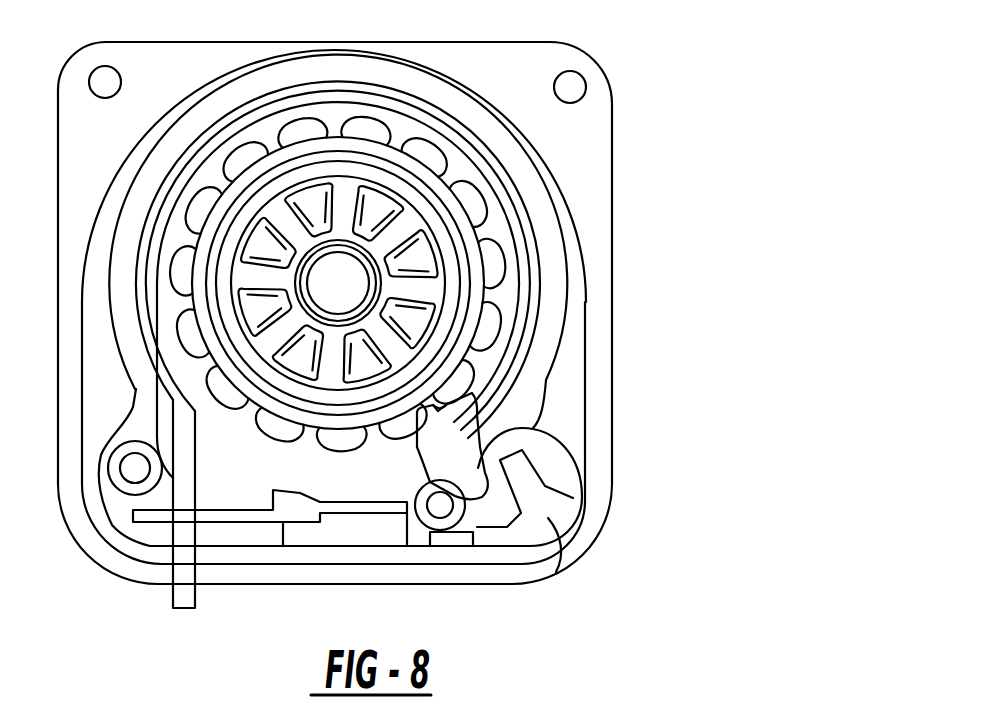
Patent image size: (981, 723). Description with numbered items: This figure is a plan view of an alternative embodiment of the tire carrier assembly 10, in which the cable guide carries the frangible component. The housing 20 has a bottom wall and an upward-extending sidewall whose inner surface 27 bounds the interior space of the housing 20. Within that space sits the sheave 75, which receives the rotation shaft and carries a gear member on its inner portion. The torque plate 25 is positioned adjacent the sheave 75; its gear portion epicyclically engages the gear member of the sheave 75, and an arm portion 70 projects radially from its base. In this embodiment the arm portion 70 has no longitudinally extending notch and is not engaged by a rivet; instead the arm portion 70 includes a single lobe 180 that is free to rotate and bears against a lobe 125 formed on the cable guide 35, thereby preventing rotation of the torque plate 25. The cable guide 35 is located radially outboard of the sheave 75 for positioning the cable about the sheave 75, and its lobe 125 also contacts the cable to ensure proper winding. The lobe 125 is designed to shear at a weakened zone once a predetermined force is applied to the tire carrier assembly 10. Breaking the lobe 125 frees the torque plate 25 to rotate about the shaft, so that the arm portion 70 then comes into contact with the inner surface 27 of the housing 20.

The tire carrier assembly 10 is at (680, 258).
The housing 20 is at (605, 160).
The inner surface 27 is at (528, 162).
The sheave 75 is at (470, 148).
The torque plate 25 is at (443, 443).
The arm portion 70 is at (477, 473).
The single lobe 180 is at (545, 430).
The lobe 125 is at (523, 478).
The cable guide 35 is at (556, 572).